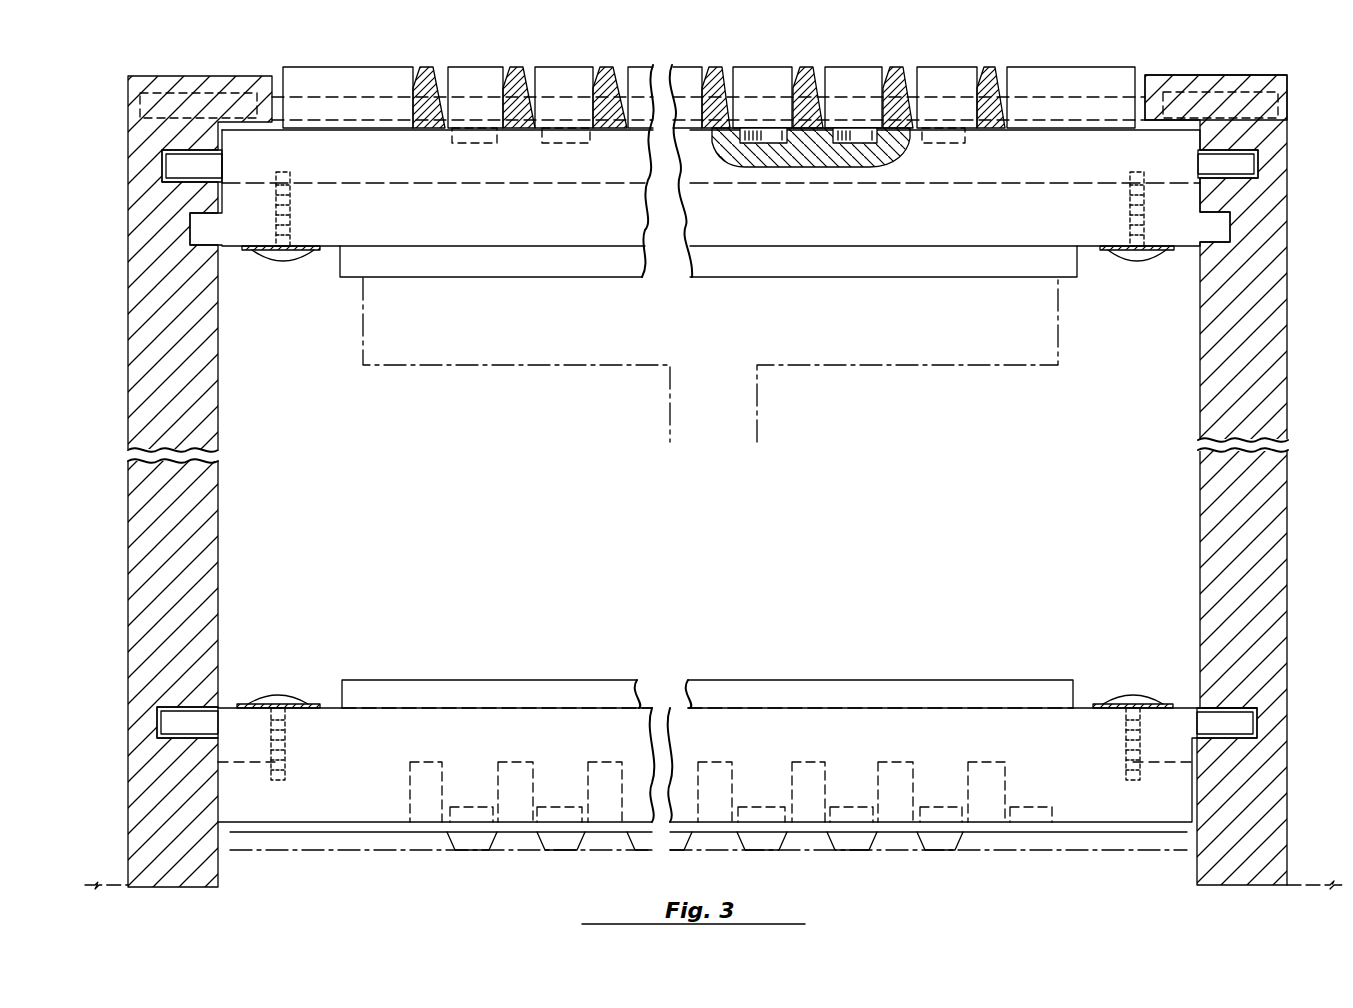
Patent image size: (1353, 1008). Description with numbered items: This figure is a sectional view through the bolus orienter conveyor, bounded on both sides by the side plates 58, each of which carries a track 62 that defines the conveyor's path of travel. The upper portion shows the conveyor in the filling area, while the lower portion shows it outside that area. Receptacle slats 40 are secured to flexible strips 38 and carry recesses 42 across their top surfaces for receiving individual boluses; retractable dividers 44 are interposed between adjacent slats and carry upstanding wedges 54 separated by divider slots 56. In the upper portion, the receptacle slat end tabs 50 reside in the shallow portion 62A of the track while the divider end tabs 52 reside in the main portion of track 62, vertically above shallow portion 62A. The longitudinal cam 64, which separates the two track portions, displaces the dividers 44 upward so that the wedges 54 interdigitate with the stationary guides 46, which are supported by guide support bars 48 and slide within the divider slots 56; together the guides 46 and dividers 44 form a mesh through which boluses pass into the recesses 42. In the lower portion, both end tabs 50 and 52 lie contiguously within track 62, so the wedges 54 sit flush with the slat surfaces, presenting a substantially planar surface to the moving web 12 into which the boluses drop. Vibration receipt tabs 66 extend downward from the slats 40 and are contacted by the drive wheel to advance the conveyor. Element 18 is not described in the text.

The web 12 is at (857, 853).
The housing 18 is at (822, 331).
The flexible strips 38 is at (258, 255).
The receptacle slat 40 is at (343, 220).
The recess 42 is at (563, 133).
The retractable divider 44 is at (1100, 150).
The guide 46 is at (430, 72).
The guide support bar 48 is at (1138, 92).
The receptacle slat end tab 50 is at (1213, 227).
The divider end tab 52 is at (1237, 165).
The wedge 54 is at (322, 75).
The divider slot 56 is at (528, 70).
The side plate 58 is at (140, 493).
The track 62 is at (1287, 166).
The shallow portion 62A is at (1287, 268).
The longitudinal cam 64 is at (1215, 196).
The vibration receipt tab 66 is at (1072, 275).